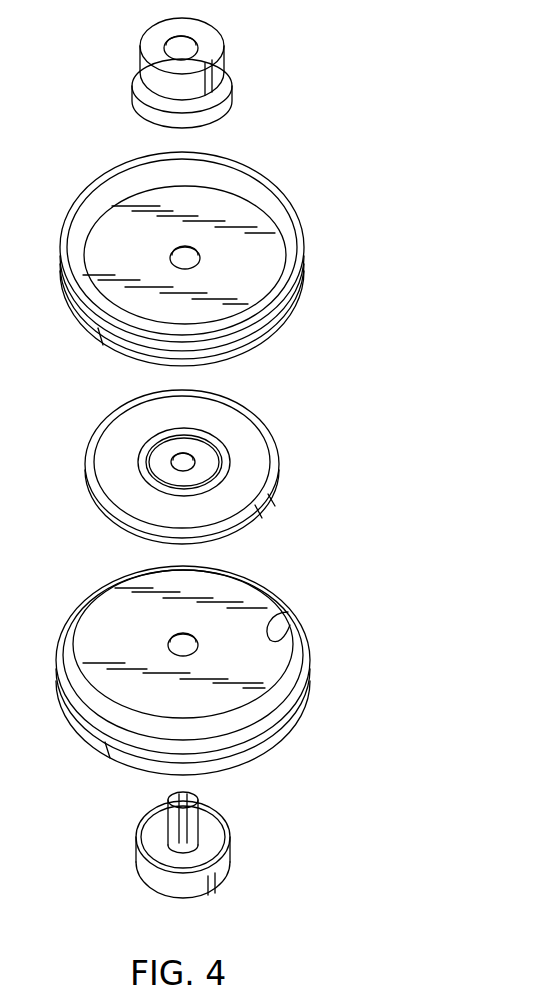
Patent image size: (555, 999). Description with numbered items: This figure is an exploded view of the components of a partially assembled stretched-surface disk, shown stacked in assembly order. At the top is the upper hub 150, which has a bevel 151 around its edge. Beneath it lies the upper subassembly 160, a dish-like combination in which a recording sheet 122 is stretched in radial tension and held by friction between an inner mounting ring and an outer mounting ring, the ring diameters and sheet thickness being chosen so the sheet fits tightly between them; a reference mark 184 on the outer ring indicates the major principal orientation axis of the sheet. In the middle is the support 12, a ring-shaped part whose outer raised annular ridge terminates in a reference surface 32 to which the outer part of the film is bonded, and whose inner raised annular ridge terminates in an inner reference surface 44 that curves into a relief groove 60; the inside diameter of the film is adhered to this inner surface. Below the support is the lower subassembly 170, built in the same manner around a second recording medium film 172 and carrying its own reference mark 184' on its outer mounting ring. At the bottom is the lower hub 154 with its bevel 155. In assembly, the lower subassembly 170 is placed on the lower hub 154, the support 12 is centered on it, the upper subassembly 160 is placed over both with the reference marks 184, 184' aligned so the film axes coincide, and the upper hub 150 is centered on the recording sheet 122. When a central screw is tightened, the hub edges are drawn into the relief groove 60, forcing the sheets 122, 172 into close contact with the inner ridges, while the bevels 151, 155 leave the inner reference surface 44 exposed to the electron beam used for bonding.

The support 12 is at (178, 467).
The reference surface 32 is at (92, 445).
The inner reference surface 44 is at (143, 453).
The relief groove 60 is at (218, 452).
The recording sheet 122 is at (110, 224).
The upper hub 150 is at (203, 82).
The bevel 151 is at (222, 101).
The lower hub 154 is at (230, 840).
The bevel 155 is at (198, 887).
The upper subassembly 160 is at (209, 264).
The lower subassembly 170 is at (209, 688).
The second recording medium film 172 is at (108, 612).
The reference mark 184 is at (74, 359).
The reference mark 184' is at (80, 777).